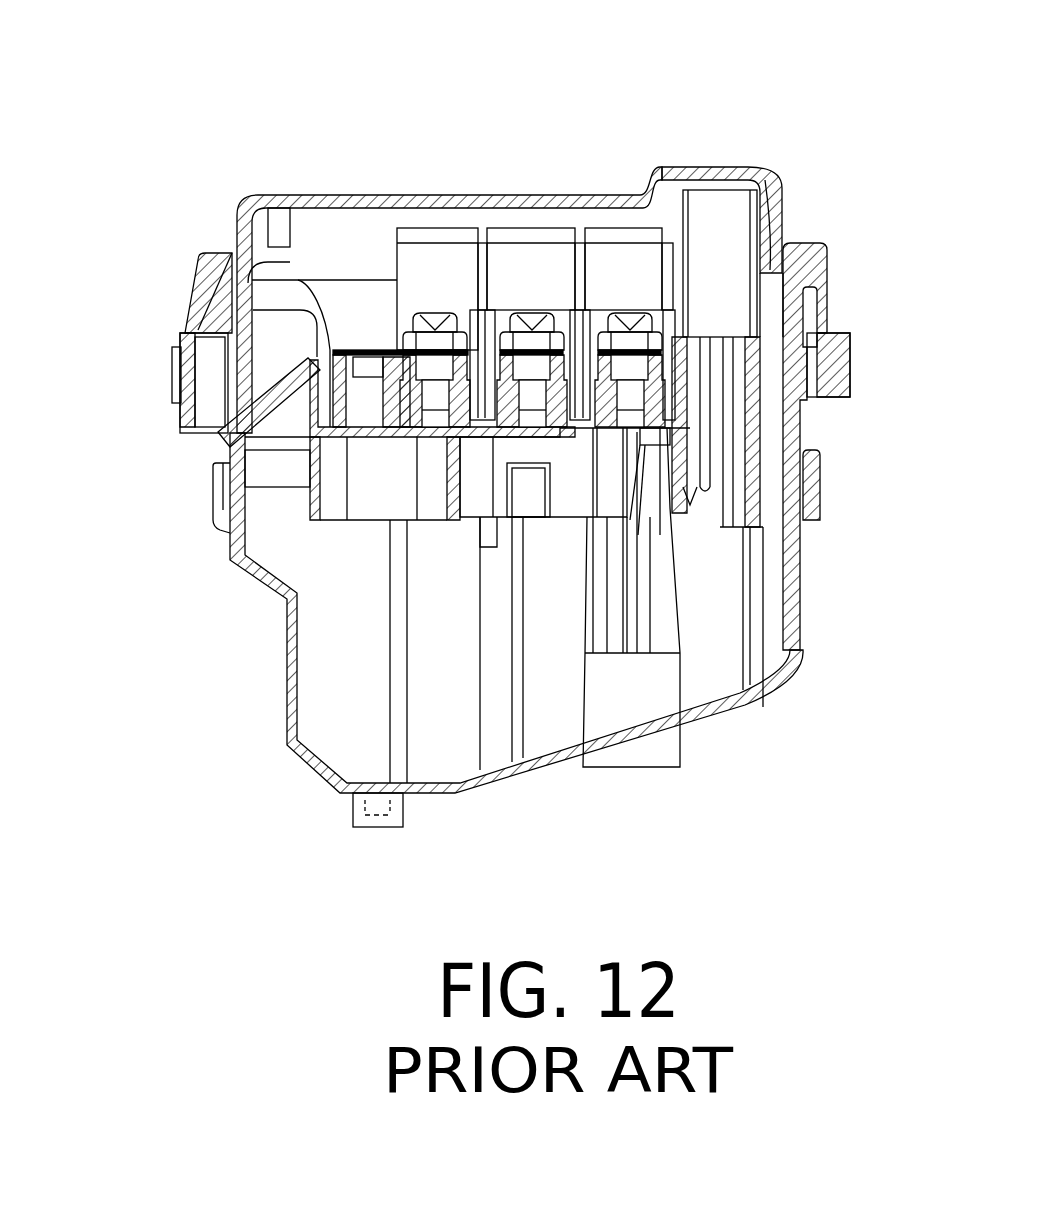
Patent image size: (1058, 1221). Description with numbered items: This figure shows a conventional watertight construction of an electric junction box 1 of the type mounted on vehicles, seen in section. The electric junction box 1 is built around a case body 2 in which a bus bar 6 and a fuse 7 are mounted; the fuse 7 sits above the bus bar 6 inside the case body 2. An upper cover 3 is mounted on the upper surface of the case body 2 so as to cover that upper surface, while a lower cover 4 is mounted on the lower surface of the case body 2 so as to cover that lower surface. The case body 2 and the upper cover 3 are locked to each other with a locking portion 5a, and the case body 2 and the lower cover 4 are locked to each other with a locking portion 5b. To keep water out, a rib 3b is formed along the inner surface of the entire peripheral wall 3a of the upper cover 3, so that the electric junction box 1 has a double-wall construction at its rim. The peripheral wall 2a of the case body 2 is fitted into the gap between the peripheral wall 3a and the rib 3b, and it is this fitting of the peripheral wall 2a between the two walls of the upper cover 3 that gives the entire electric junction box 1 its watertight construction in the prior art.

The electric junction box 1 is at (272, 167).
The case body 2 is at (238, 440).
The peripheral wall 2a is at (783, 312).
The upper cover 3 is at (787, 183).
The peripheral wall 3a is at (198, 297).
The rib 3b is at (232, 268).
The lower cover 4 is at (287, 672).
The locking portion 5a is at (830, 333).
The locking portion 5b is at (820, 500).
The bus bar 6 is at (235, 250).
The fuse 7 is at (428, 248).